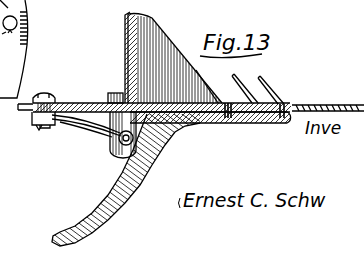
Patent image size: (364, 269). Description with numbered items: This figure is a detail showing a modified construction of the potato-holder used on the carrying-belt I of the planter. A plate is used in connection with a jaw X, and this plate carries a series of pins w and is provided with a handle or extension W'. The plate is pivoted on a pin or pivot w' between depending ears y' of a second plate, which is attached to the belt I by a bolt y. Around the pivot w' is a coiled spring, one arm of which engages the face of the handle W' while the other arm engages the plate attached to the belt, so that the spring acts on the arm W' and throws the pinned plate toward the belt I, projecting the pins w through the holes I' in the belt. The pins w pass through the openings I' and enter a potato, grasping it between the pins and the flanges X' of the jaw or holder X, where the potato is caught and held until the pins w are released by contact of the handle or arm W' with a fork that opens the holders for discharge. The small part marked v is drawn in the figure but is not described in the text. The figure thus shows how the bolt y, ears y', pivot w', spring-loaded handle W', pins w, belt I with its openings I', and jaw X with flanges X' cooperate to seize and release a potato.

The jaw X is at (163, 66).
The flanges X' is at (152, 60).
The bolt y is at (56, 98).
The depending ears y' is at (84, 138).
The clamp foot v is at (45, 126).
The pins w is at (168, 130).
The pivot pin w' is at (107, 137).
The handle W' is at (170, 134).
The belt I is at (165, 96).
The openings I' is at (182, 55).